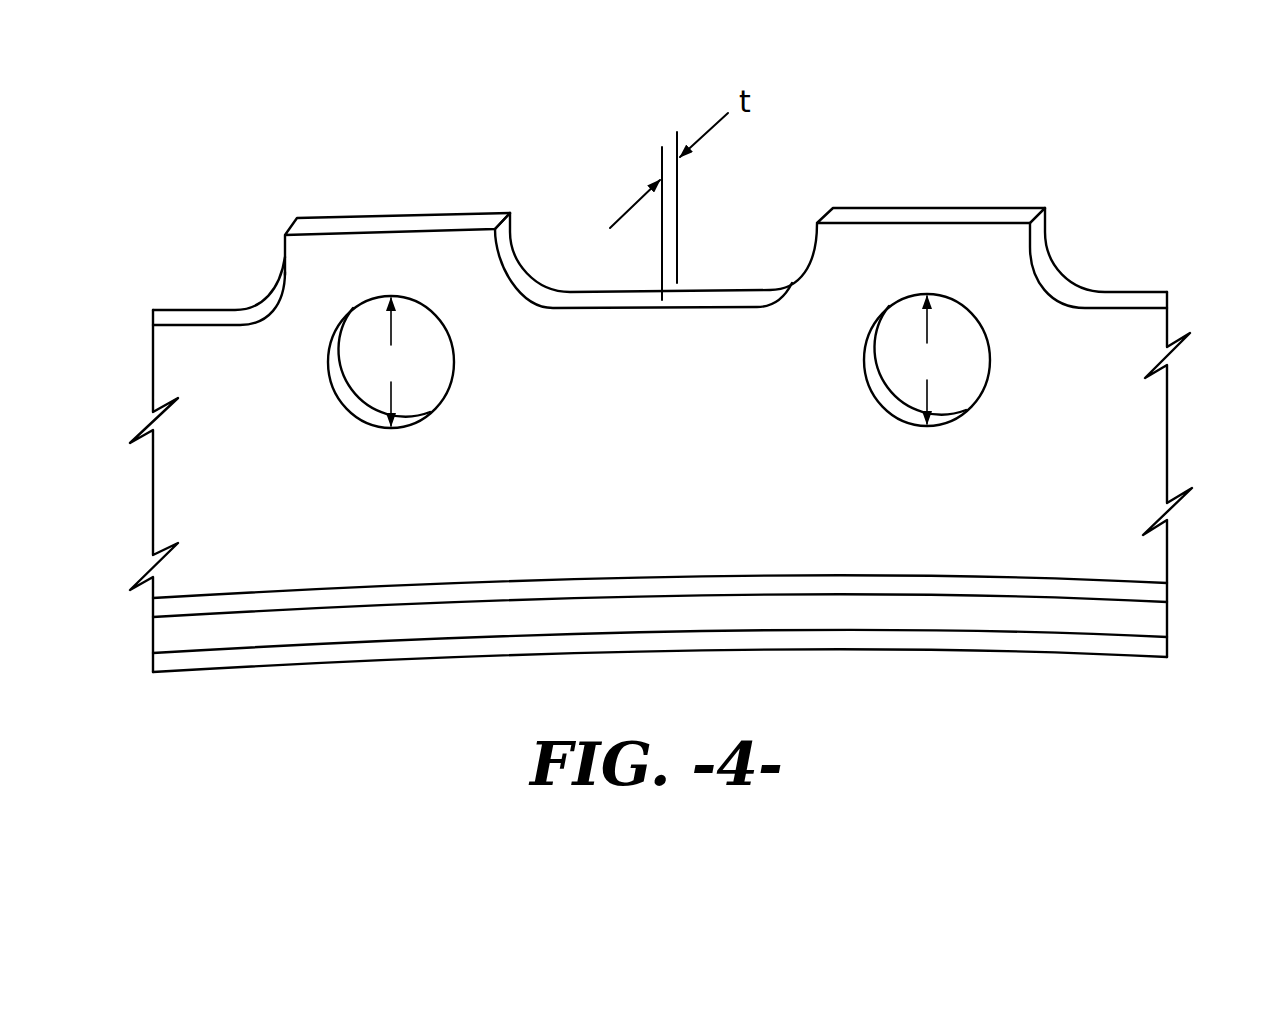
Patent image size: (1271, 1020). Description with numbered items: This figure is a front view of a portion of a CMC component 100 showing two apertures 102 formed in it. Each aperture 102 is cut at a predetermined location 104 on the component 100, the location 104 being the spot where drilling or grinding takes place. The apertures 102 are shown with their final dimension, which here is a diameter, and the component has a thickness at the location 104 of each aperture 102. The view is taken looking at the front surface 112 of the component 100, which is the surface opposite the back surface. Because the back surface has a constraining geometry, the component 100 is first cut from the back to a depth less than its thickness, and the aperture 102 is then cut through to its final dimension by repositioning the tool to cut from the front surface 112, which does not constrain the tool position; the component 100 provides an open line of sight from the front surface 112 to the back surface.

The CMC component 100 is at (327, 175).
The aperture 102 is at (426, 355).
The location 104 is at (315, 380).
The front surface 112 is at (1122, 457).